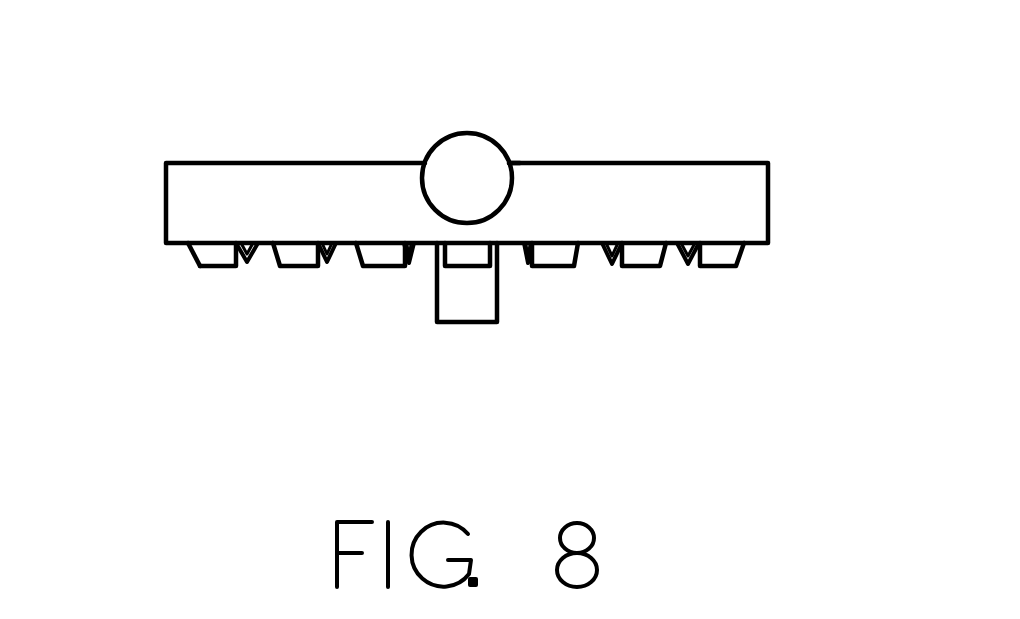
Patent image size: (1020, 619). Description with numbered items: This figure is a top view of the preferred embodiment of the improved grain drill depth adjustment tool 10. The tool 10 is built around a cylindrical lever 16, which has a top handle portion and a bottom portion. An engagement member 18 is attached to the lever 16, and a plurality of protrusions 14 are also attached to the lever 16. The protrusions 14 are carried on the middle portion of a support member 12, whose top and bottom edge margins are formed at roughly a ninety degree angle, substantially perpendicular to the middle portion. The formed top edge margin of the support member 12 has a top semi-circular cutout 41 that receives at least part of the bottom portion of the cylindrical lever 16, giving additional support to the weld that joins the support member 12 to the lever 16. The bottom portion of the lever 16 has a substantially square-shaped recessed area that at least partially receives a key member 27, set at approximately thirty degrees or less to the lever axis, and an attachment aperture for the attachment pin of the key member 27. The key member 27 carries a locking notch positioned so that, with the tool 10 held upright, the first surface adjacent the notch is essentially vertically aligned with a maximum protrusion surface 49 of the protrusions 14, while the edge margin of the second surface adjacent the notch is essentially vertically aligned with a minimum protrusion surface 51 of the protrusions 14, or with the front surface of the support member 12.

The improved grain drill depth adjustment tool 10 is at (650, 92).
The support member 12 is at (279, 192).
The plurality of protrusions 14 is at (388, 260).
The lever 16 is at (474, 166).
The engagement member 18 is at (418, 292).
The key member 27 is at (463, 313).
The top semi-circular cutout 41 is at (511, 172).
The maximum protrusion surface 49 is at (205, 268).
The minimum protrusion surface 51 is at (200, 260).